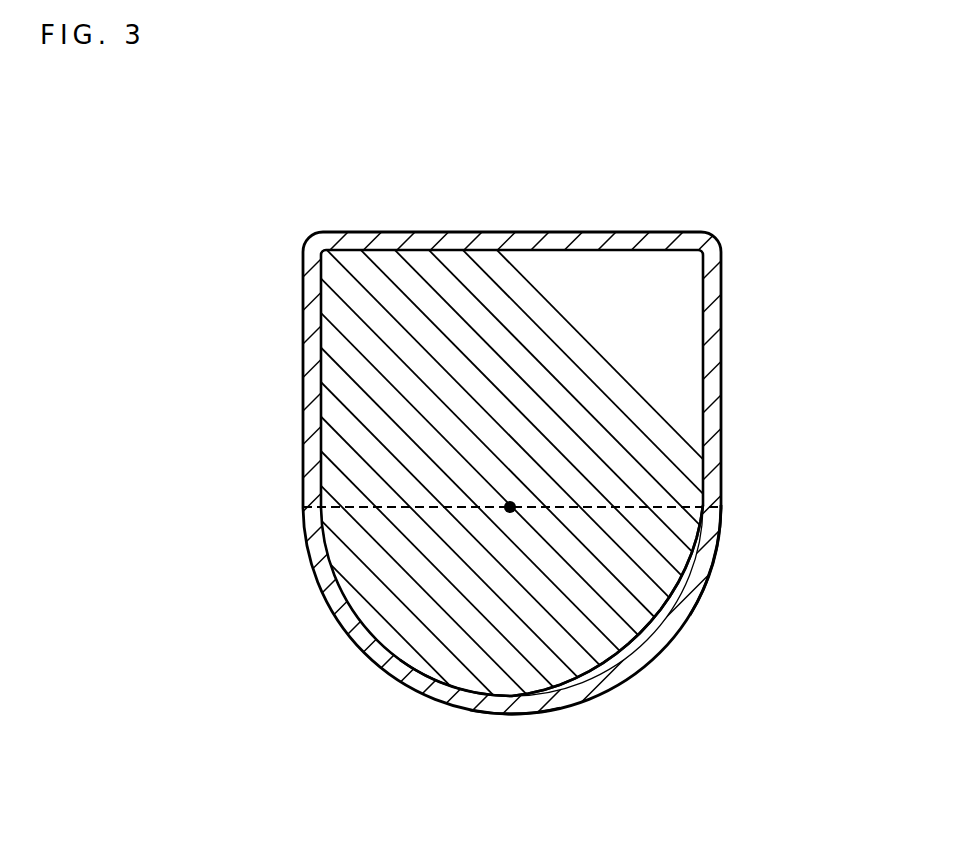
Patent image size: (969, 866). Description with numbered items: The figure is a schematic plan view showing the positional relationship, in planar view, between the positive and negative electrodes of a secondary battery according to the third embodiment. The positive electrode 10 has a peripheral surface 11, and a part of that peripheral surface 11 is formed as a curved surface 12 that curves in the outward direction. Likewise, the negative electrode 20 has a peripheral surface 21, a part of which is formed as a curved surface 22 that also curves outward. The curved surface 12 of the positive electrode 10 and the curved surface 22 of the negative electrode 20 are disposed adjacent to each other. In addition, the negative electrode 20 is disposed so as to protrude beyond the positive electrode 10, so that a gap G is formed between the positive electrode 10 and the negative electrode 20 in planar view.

The positive electrode 10 is at (355, 570).
The peripheral surface 11 is at (687, 613).
The curved surface 12 is at (468, 712).
The negative electrode 20 is at (357, 644).
The peripheral surface 21 is at (713, 566).
The curved surface 22 is at (519, 716).
The gap G is at (558, 650).